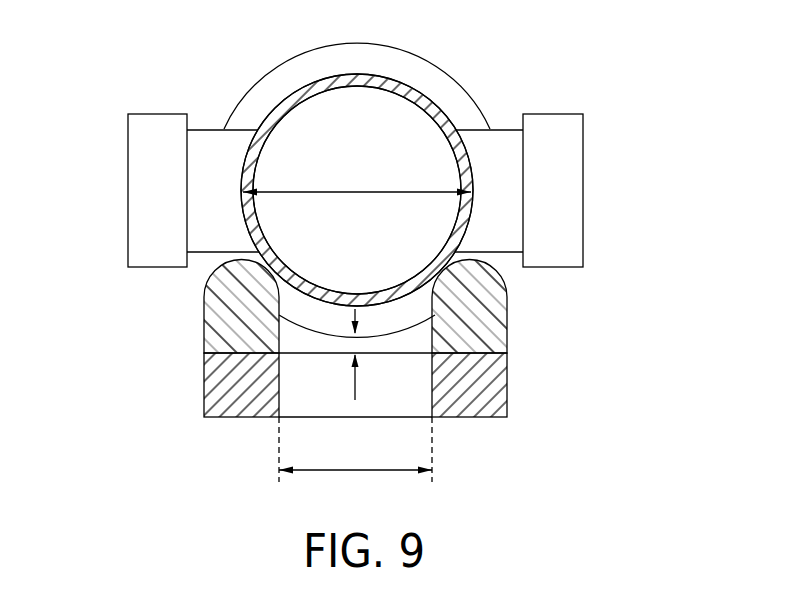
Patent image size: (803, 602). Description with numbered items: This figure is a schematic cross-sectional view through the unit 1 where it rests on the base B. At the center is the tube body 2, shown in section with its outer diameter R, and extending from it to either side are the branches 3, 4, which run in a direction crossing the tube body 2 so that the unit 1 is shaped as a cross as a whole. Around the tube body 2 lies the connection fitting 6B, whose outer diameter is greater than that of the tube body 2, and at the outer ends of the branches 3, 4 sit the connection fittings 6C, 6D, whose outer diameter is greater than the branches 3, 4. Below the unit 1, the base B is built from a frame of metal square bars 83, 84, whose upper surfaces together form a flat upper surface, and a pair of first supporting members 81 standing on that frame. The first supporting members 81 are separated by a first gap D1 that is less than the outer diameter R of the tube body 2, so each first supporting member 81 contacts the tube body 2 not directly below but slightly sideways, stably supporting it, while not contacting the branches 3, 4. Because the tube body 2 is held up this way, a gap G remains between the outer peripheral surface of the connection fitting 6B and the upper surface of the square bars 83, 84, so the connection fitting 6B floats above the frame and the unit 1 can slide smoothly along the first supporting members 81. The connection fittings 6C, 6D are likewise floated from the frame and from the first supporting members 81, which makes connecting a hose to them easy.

The unit 1 is at (517, 47).
The tube body 2 is at (398, 78).
The branch 3 is at (507, 129).
The branch 4 is at (208, 129).
The connection fitting 6B is at (325, 44).
The connection fitting 6C is at (583, 181).
The connection fitting 6D is at (128, 178).
The first supporting member 81 is at (204, 318).
The square bar 83 is at (204, 385).
The square bar 84 is at (313, 405).
The base B is at (577, 331).
The outer diameter of the tube body R is at (357, 180).
The gap G is at (364, 356).
The first gap D1 is at (355, 458).